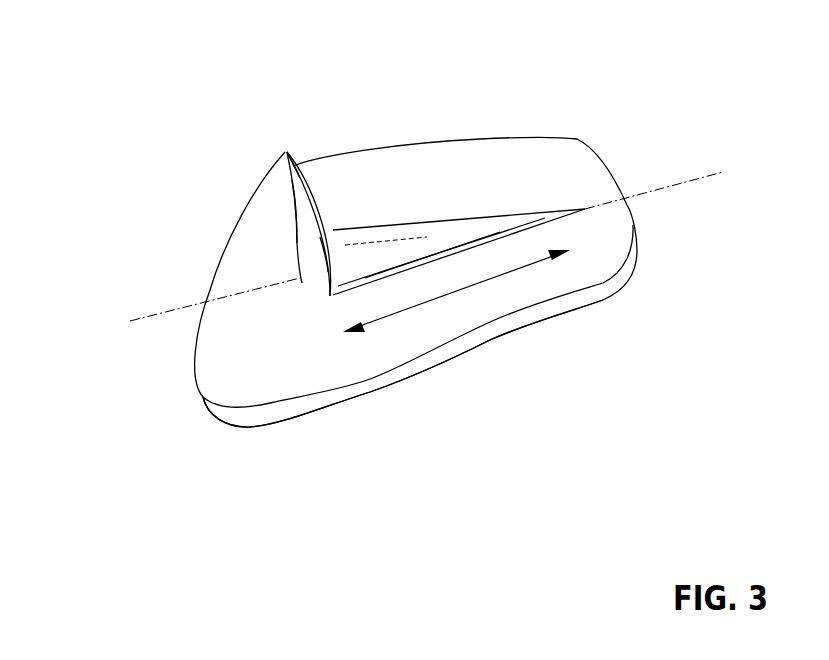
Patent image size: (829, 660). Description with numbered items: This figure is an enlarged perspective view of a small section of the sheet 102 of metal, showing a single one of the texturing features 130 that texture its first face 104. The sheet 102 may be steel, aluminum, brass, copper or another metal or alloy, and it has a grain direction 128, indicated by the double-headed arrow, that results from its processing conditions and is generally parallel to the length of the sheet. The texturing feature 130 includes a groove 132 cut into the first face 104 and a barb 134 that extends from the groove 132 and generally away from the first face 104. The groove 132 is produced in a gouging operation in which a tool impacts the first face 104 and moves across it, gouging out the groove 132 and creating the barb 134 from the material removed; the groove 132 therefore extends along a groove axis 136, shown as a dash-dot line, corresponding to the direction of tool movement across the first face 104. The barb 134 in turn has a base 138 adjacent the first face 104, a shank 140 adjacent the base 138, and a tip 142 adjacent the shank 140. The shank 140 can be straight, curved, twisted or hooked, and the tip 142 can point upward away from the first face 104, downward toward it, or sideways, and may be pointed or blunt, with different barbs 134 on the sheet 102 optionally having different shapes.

The sheet of metal 102 is at (553, 167).
The first face 104 is at (360, 367).
The grain direction 128 is at (500, 275).
The texturing feature 130 is at (333, 208).
The groove 132 is at (447, 235).
The barb 134 is at (304, 196).
The groove axis 136 is at (678, 183).
The base 138 is at (299, 287).
The shank 140 is at (310, 239).
The tip 142 is at (278, 164).